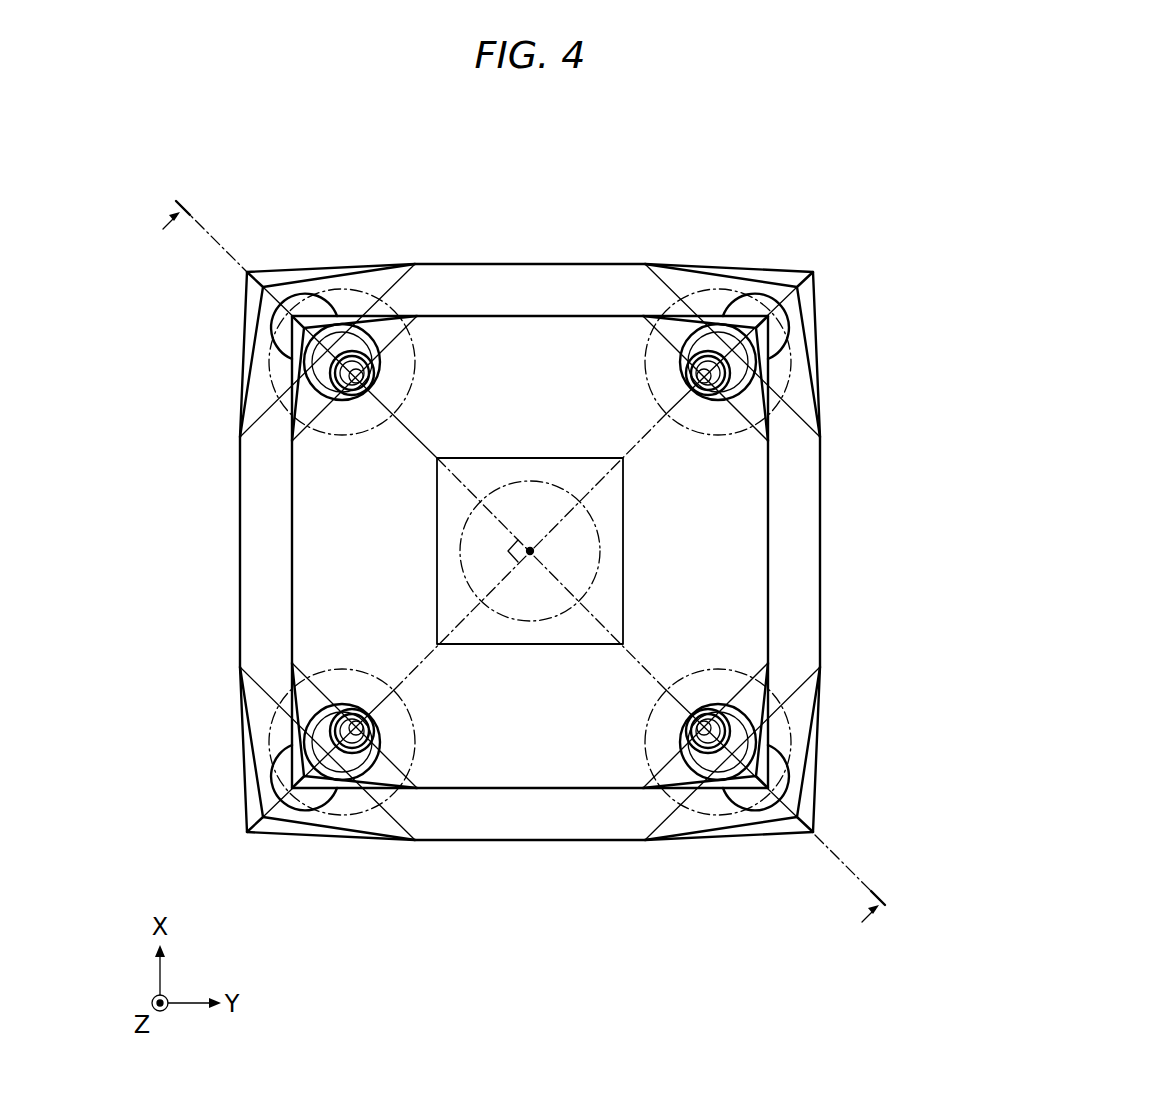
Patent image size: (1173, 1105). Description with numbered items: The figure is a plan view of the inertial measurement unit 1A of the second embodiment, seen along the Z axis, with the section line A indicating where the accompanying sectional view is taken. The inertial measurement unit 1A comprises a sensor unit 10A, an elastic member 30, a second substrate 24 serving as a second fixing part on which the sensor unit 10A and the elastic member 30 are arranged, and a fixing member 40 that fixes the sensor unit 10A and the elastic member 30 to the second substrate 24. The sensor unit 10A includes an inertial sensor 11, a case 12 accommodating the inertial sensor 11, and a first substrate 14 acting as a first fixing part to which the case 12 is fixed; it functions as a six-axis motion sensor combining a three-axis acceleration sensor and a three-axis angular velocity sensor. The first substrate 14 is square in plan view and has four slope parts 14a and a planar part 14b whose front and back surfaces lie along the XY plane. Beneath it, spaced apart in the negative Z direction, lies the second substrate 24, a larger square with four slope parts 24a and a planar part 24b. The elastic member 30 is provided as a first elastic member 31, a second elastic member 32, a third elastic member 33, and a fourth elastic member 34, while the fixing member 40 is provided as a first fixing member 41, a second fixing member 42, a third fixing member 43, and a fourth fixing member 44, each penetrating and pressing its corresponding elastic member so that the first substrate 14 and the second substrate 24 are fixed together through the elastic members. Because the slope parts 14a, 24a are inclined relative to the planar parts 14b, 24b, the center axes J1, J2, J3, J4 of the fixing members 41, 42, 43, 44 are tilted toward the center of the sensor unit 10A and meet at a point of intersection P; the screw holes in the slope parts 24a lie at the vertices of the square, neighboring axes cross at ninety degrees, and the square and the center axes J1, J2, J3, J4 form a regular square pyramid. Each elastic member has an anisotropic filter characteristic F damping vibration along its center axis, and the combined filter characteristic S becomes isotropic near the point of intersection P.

The inertial measurement unit 1A is at (848, 206).
The sensor unit 10A is at (639, 555).
The inertial sensor 11 is at (596, 517).
The case 12 is at (606, 549).
The first substrate 14 is at (601, 555).
The slope parts 14a is at (396, 320).
The planar part 14b is at (574, 775).
The second substrate 24 is at (559, 552).
The slope parts 24a is at (262, 356).
The planar part 24b is at (805, 626).
The elastic member 30 is at (506, 521).
The first elastic member 31 is at (337, 350).
The second elastic member 32 is at (722, 350).
The third elastic member 33 is at (348, 768).
The fourth elastic member 34 is at (718, 752).
The fixing member 40 is at (481, 552).
The first fixing member 41 is at (338, 372).
The second fixing member 42 is at (735, 369).
The third fixing member 43 is at (338, 723).
The fourth fixing member 44 is at (735, 725).
The center axis J1 is at (423, 437).
The center axis J2 is at (632, 437).
The center axis J3 is at (423, 667).
The center axis J4 is at (632, 667).
The combined filter characteristic S is at (502, 483).
The point of intersection P is at (537, 551).
The anisotropic filter characteristic F is at (346, 436).
The section line A- A is at (516, 573).